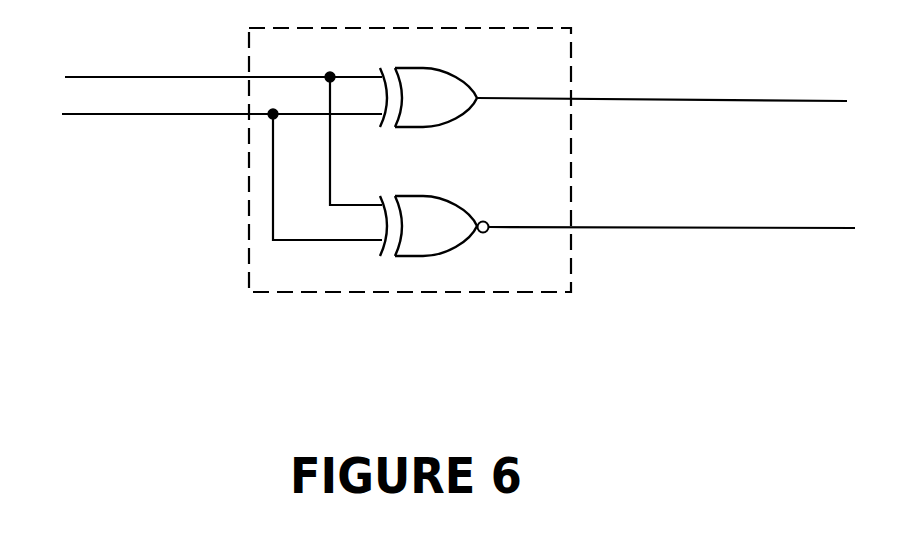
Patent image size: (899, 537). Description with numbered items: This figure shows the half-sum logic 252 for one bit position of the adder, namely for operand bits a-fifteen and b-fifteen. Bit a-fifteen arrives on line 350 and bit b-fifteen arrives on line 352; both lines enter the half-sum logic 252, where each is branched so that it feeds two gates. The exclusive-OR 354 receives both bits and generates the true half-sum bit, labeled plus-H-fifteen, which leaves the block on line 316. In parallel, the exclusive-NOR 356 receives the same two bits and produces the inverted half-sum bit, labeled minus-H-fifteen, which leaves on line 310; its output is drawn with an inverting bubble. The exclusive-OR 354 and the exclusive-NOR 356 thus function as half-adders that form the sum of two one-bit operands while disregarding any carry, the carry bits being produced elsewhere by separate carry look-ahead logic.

The half-sum logic 252 is at (571, 77).
The line 350 is at (152, 77).
The line 352 is at (143, 114).
The exclusive-OR 354 is at (450, 72).
The exclusive-NOR 356 is at (450, 198).
The line 316 is at (643, 101).
The line 310 is at (643, 228).